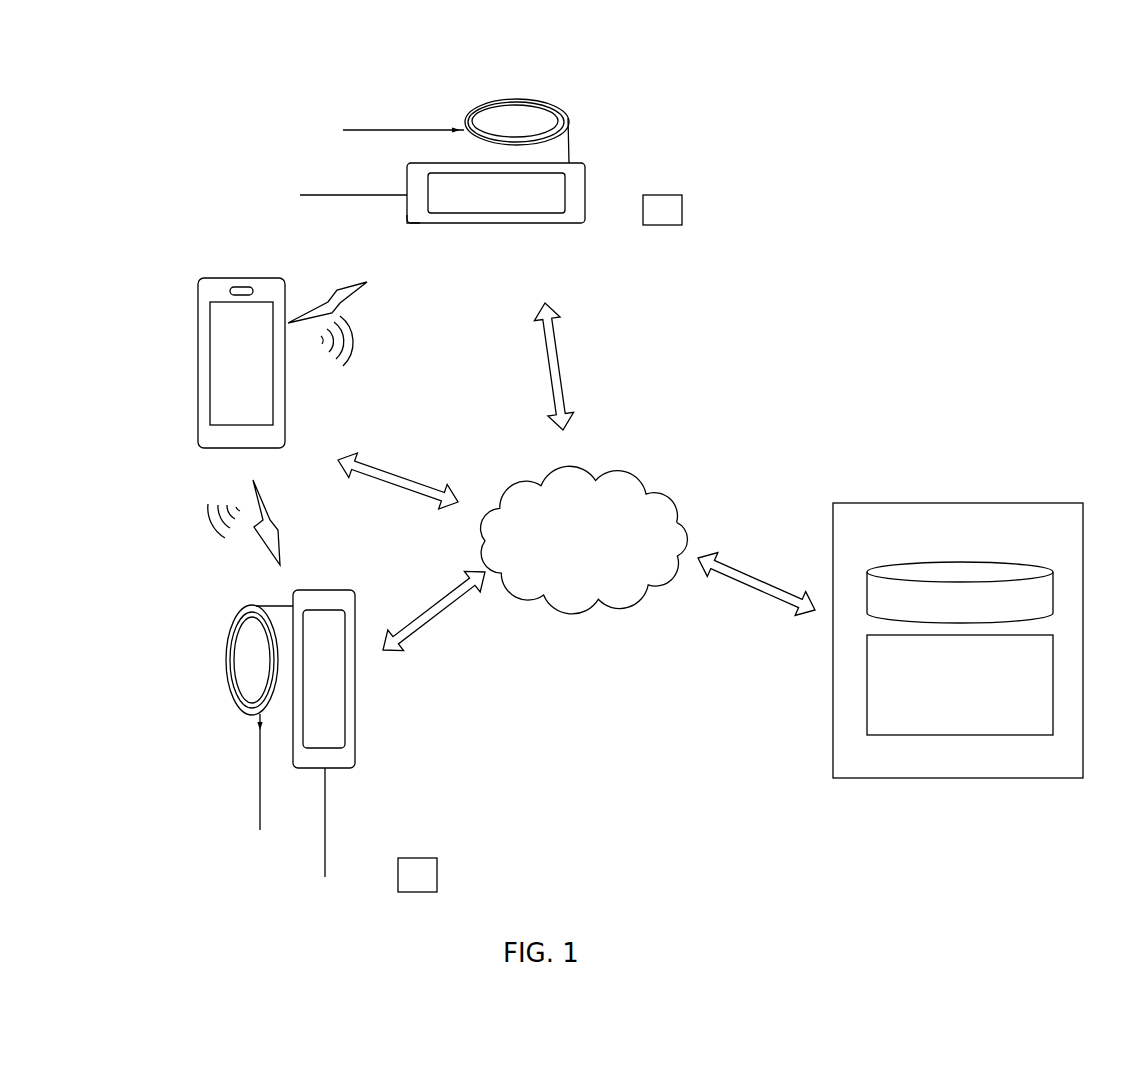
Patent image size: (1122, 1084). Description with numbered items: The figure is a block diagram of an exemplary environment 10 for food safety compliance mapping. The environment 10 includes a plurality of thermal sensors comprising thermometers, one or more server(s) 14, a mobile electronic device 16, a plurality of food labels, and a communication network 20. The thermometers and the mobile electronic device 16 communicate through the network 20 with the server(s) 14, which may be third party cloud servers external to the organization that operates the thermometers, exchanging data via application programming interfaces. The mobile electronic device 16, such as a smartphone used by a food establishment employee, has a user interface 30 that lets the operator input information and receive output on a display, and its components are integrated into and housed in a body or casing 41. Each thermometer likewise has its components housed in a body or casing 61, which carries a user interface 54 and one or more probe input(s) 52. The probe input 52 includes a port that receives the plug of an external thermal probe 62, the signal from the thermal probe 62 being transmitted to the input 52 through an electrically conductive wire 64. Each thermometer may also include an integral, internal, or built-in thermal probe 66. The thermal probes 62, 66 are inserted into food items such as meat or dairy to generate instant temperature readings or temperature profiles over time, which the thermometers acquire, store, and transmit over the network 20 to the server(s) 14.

The environment 10 is at (795, 170).
The server 14 is at (942, 497).
The mobile electronic device 16 is at (196, 362).
The communication network 20 is at (566, 561).
The user interface 30 is at (213, 412).
The body or casing 41 is at (203, 278).
The probe input 52 is at (574, 160).
The user interface 54 is at (497, 207).
The body or casing 61 is at (420, 215).
The external thermal probe 62 is at (378, 130).
The electrically conductive wire 64 is at (569, 117).
The internal thermal probe 66 is at (375, 195).